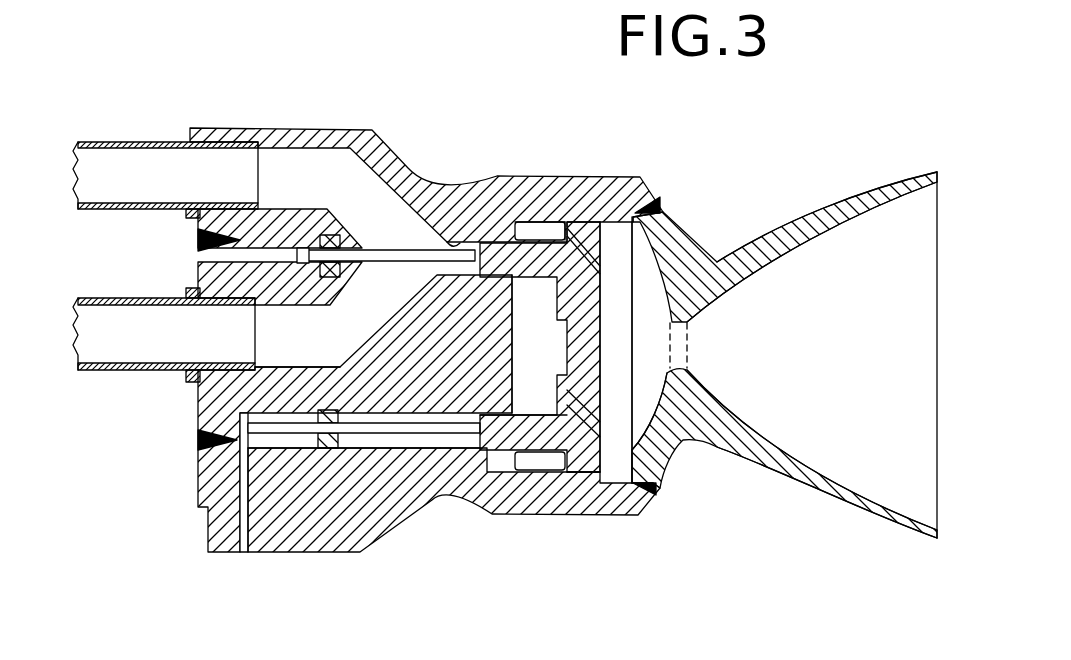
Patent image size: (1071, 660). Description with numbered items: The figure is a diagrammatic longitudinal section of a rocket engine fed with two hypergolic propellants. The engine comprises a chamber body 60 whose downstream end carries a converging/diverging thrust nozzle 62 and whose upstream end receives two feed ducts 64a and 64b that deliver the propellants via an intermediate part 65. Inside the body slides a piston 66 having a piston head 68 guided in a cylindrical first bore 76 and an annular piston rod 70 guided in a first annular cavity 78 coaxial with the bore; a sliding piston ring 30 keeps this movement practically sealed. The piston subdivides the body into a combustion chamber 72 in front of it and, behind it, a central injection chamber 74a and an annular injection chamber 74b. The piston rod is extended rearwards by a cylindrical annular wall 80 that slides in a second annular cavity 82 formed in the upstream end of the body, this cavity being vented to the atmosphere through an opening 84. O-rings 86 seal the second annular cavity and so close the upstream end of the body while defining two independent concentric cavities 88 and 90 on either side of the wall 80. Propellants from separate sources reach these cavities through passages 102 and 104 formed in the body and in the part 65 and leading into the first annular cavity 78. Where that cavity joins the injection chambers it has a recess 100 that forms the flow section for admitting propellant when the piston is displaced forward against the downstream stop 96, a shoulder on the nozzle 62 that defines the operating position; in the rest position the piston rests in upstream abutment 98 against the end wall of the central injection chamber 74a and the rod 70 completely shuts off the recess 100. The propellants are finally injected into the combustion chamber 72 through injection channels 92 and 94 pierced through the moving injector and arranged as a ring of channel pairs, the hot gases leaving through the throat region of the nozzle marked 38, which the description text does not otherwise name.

The sliding piston ring 30 is at (585, 470).
The nozzle throat insert 38 is at (645, 270).
The chamber body 60 is at (600, 188).
The thrust nozzle 62 is at (800, 218).
The feed duct 64a is at (110, 142).
The feed duct 64b is at (133, 372).
The intermediate part 65 is at (244, 392).
The piston 66 is at (606, 332).
The piston head 68 is at (560, 348).
The annular piston rod 70 is at (578, 468).
The combustion chamber 72 is at (664, 380).
The central injection chamber 74a is at (545, 366).
The annular injection chamber 74b is at (543, 232).
The first bore 76 is at (538, 478).
The first annular cavity 78 is at (452, 243).
The cylindrical annular wall 80 is at (380, 250).
The second annular cavity 82 is at (240, 262).
The opening 84 is at (243, 533).
The O-rings 86 is at (330, 235).
The concentric cavity 88 is at (390, 433).
The concentric cavity 90 is at (412, 438).
The injection channel 92 is at (560, 213).
The injection channel 94 is at (570, 405).
The downstream stop 96 is at (672, 427).
The upstream abutment 98 is at (527, 222).
The recess 100 is at (500, 452).
The passage 102 is at (298, 152).
The passage 104 is at (292, 365).